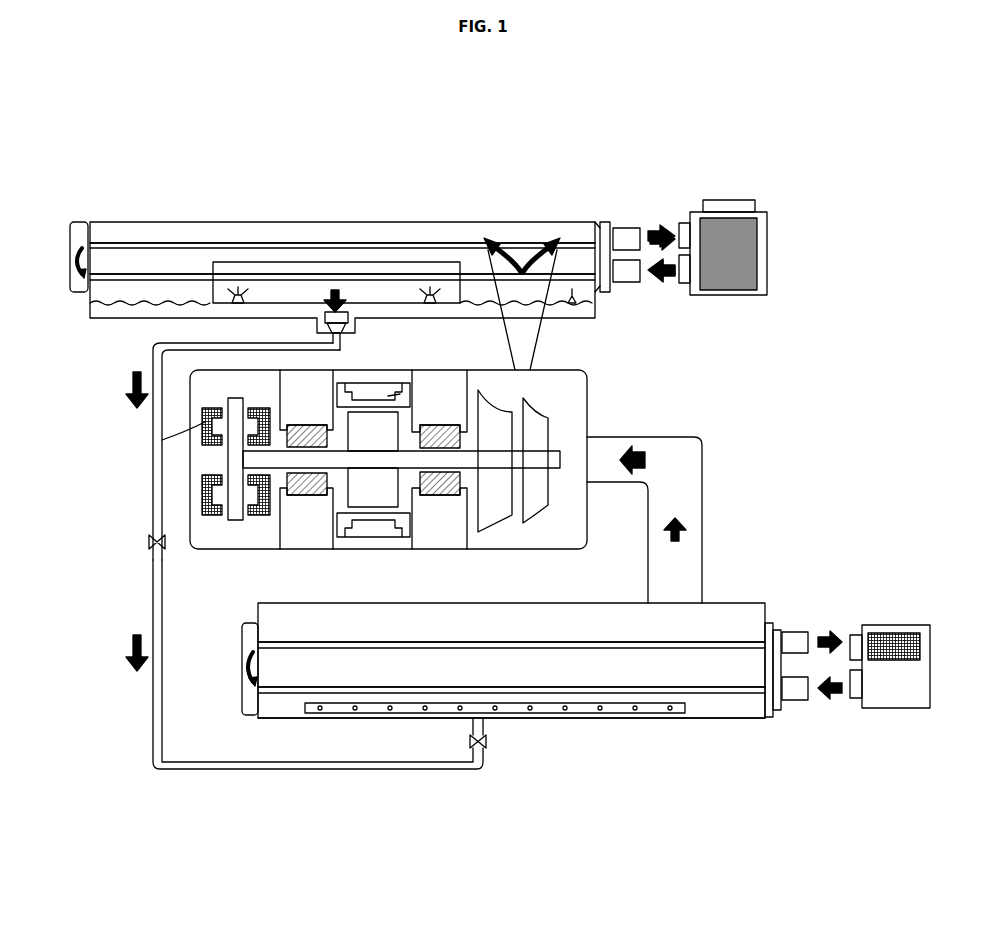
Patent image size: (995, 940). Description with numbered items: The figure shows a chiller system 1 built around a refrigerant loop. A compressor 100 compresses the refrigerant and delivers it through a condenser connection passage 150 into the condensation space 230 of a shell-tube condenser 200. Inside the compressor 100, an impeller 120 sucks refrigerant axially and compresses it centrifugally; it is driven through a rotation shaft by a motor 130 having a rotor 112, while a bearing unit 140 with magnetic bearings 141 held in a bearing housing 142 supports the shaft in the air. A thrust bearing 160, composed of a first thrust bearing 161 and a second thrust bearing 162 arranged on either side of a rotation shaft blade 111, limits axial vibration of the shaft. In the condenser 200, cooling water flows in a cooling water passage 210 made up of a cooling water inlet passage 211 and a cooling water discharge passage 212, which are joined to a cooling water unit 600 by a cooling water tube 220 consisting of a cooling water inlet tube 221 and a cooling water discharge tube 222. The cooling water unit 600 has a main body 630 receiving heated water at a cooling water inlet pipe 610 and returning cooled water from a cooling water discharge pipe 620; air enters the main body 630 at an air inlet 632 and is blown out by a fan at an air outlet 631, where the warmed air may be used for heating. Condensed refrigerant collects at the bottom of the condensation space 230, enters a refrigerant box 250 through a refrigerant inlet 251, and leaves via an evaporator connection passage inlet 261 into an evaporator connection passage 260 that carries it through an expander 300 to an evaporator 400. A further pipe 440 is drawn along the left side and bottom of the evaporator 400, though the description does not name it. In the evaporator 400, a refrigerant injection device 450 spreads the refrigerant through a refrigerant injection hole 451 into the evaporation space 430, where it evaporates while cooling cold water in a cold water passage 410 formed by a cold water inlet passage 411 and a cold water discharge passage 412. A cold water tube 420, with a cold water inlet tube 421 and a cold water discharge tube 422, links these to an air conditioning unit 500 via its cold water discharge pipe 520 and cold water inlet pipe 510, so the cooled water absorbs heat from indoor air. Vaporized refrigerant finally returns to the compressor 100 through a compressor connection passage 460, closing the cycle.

The chiller system 1 is at (656, 164).
The compressor 100 is at (606, 405).
The rotation shaft blade 111 is at (160, 440).
The rotor 112 is at (394, 396).
The impeller 120 is at (545, 506).
The motor 130 is at (366, 546).
The bearing unit 140 is at (376, 488).
The magnetic bearing 141 is at (300, 500).
The bearing housing 142 is at (288, 545).
The condenser connection passage 150 is at (512, 346).
The thrust bearing 160 is at (232, 513).
The first thrust bearing 161 is at (215, 530).
The second thrust bearing 162 is at (238, 525).
The condenser 200 is at (515, 200).
The cooling water passage 210 is at (118, 168).
The cooling water inlet passage 211 is at (122, 276).
The cooling water discharge passage 212 is at (150, 246).
The cooling water tube 220 is at (638, 303).
The cooling water inlet tube 221 is at (626, 252).
The cooling water discharge tube 222 is at (628, 284).
The condensation space 230 is at (572, 304).
The refrigerant box 250 is at (295, 262).
The refrigerant inlet 251 is at (430, 305).
The evaporator connection passage 260 is at (152, 470).
The evaporator connection passage inlet 261 is at (353, 333).
The expander 300 is at (147, 542).
The evaporator 400 is at (579, 734).
The cold water passage 410 is at (712, 826).
The cold water inlet passage 411 is at (725, 692).
The cold water discharge passage 412 is at (760, 652).
The cold water tube 420 is at (812, 736).
The cold water inlet tube 421 is at (790, 660).
The cold water discharge tube 422 is at (806, 682).
The evaporation space 430 is at (702, 716).
The water pipe 440 is at (250, 700).
The refrigerant injection device 450 is at (487, 746).
The refrigerant injection hole 451 is at (393, 714).
The compressor connection passage 460 is at (701, 491).
The air conditioning unit 500 is at (885, 656).
The cold water inlet pipe 510 is at (858, 640).
The cold water discharge pipe 520 is at (856, 700).
The cooling water unit 600 is at (743, 240).
The cooling water inlet pipe 610 is at (684, 224).
The cooling water discharge pipe 620 is at (684, 284).
The main body 630 is at (766, 214).
The air outlet 631 is at (740, 200).
The air inlet 632 is at (728, 291).